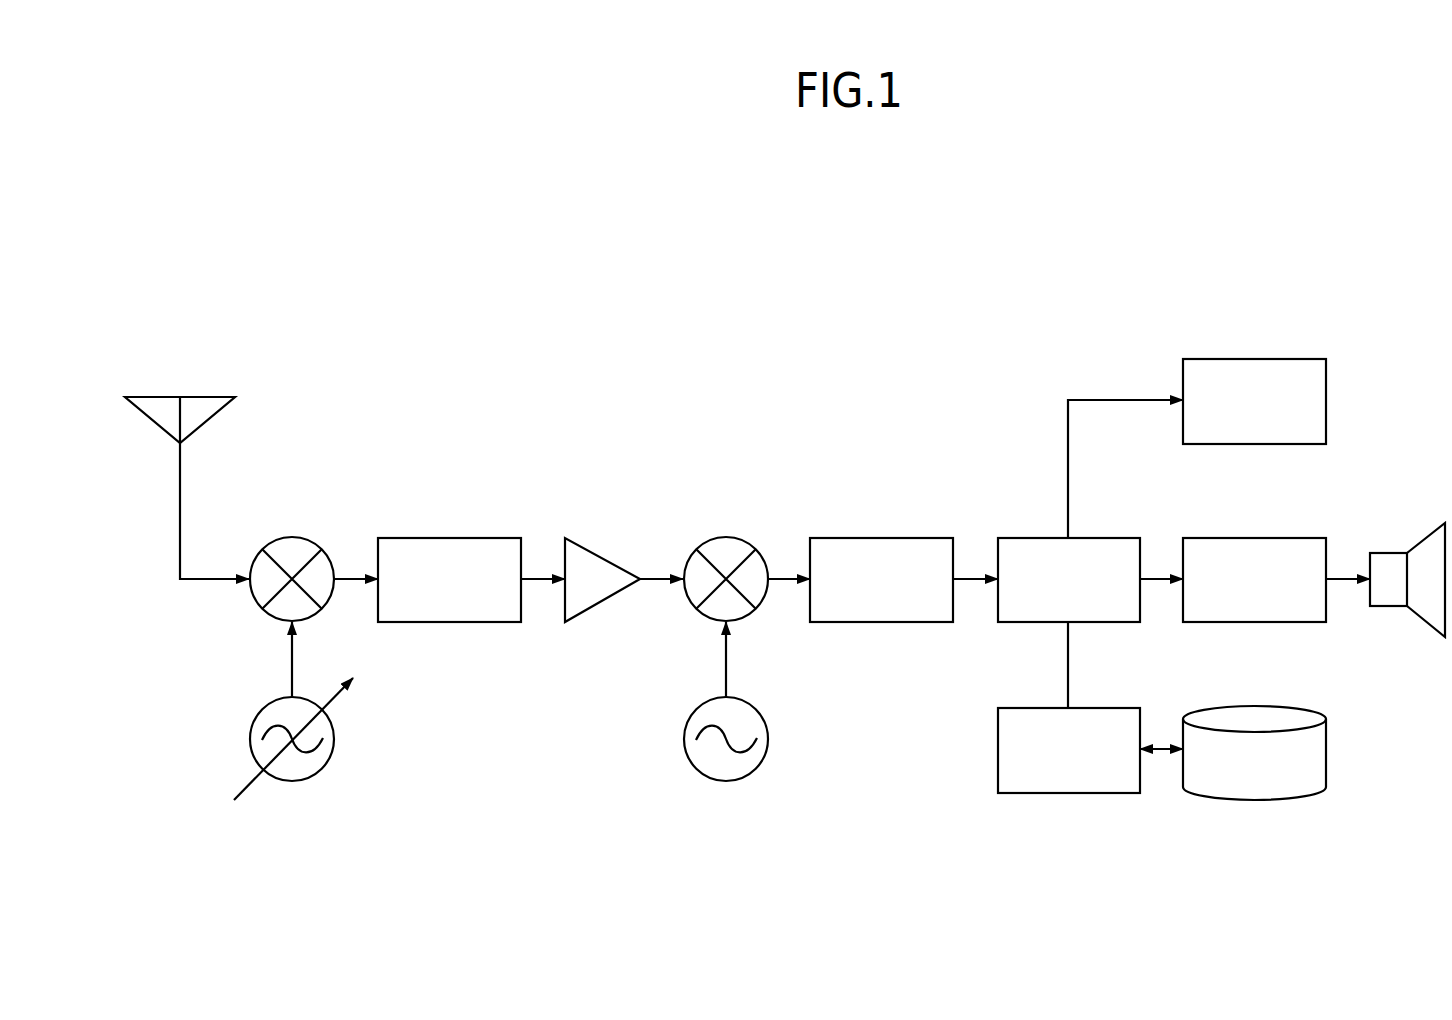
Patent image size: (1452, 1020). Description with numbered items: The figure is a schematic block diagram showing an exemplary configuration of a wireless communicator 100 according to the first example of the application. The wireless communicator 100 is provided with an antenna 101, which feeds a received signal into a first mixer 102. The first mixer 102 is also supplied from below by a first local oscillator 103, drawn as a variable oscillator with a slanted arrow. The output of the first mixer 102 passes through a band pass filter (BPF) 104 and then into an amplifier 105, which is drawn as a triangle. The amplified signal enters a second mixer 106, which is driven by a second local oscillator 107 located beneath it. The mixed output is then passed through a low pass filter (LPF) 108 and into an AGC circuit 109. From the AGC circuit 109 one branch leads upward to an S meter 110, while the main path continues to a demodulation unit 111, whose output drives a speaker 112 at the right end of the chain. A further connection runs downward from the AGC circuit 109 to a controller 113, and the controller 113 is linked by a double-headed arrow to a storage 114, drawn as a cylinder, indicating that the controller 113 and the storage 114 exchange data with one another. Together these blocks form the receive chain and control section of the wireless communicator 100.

The wireless communicator 100 is at (1306, 237).
The antenna 101 is at (207, 397).
The first mixer 102 is at (299, 510).
The first local oscillator 103 is at (335, 740).
The band pass filter (BPF) 104 is at (458, 511).
The amplifier 105 is at (585, 510).
The second mixer 106 is at (731, 510).
The second local oscillator 107 is at (768, 744).
The low pass filter (LPF) 108 is at (897, 510).
The AGC circuit 109 is at (1099, 510).
The S meter 110 is at (1262, 337).
The demodulation unit 111 is at (1265, 510).
The speaker 112 is at (1388, 553).
The controller 113 is at (1102, 682).
The storage 114 is at (1255, 706).